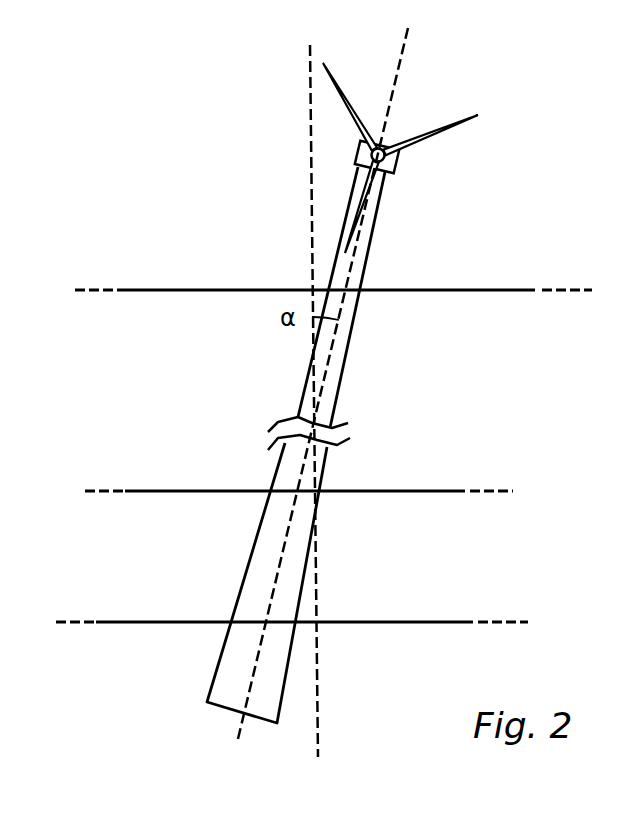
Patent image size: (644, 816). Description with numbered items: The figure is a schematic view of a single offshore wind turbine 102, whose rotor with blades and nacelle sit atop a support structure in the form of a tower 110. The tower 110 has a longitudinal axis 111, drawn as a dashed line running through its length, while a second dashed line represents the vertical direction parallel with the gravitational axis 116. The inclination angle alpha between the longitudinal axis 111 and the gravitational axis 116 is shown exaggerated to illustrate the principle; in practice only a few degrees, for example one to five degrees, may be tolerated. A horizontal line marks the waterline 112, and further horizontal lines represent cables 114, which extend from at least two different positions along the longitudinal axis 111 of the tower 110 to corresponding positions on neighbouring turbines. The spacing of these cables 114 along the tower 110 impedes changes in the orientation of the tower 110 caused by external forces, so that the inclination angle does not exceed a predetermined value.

The wind turbine 102 is at (229, 143).
The tower 110 is at (368, 242).
The longitudinal axis 111 is at (403, 45).
The waterline 112 is at (430, 491).
The cables 114 is at (500, 290).
The gravitational axis 116 is at (310, 230).